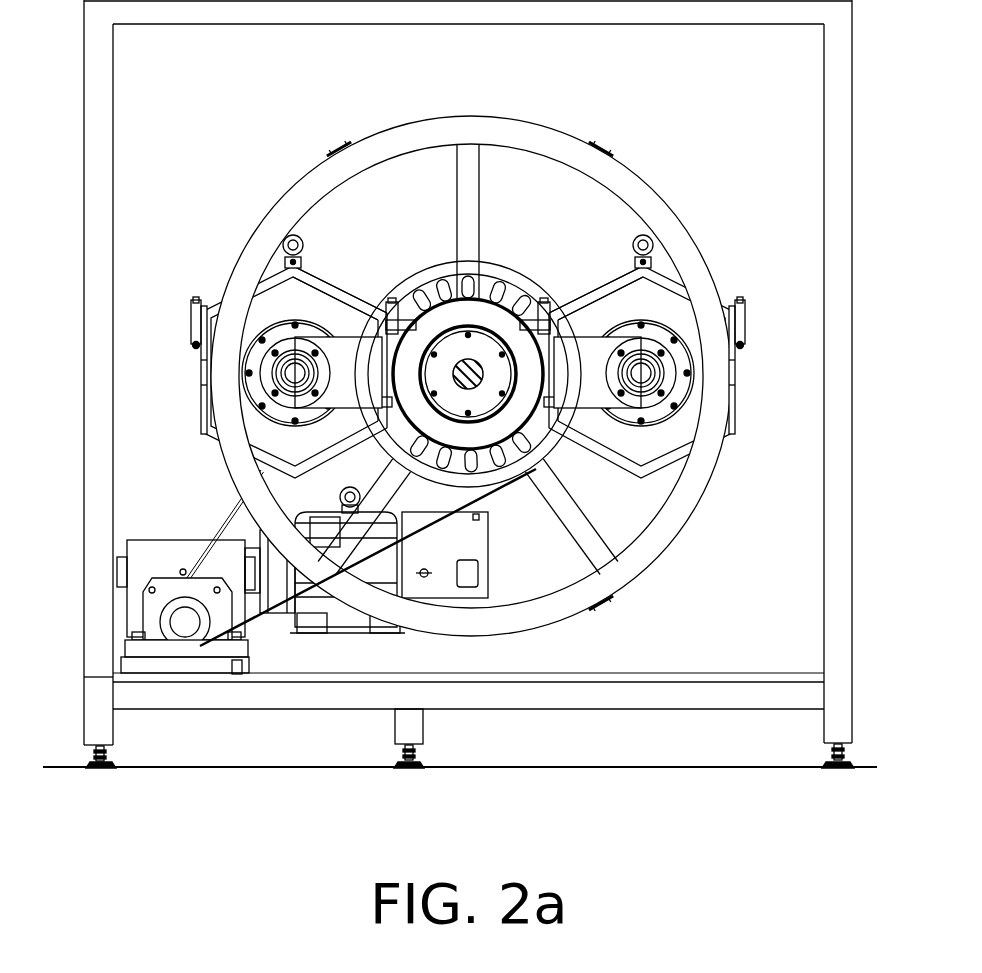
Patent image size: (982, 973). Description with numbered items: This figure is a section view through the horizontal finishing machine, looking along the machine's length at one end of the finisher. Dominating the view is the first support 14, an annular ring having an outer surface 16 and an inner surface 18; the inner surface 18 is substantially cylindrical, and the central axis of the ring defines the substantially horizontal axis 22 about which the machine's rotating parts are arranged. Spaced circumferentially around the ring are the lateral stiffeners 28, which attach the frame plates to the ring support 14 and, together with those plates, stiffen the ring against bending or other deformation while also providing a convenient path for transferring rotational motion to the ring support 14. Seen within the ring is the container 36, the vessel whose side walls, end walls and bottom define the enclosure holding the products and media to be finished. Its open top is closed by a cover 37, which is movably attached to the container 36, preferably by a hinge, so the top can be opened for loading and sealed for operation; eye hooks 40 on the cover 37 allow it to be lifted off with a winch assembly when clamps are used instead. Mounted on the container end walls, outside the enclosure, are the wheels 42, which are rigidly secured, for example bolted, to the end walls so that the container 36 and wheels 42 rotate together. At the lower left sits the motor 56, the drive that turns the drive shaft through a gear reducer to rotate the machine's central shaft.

The first support 14 is at (645, 180).
The outer surface 16 is at (683, 228).
The inner surface 18 is at (571, 170).
The horizontal axis 22 is at (466, 362).
The lateral stiffeners 28 is at (337, 143).
The container 36 is at (665, 272).
The cover 37 is at (300, 272).
The eye hooks 40 is at (283, 245).
The wheels 42 is at (708, 312).
The motor 56 is at (347, 620).